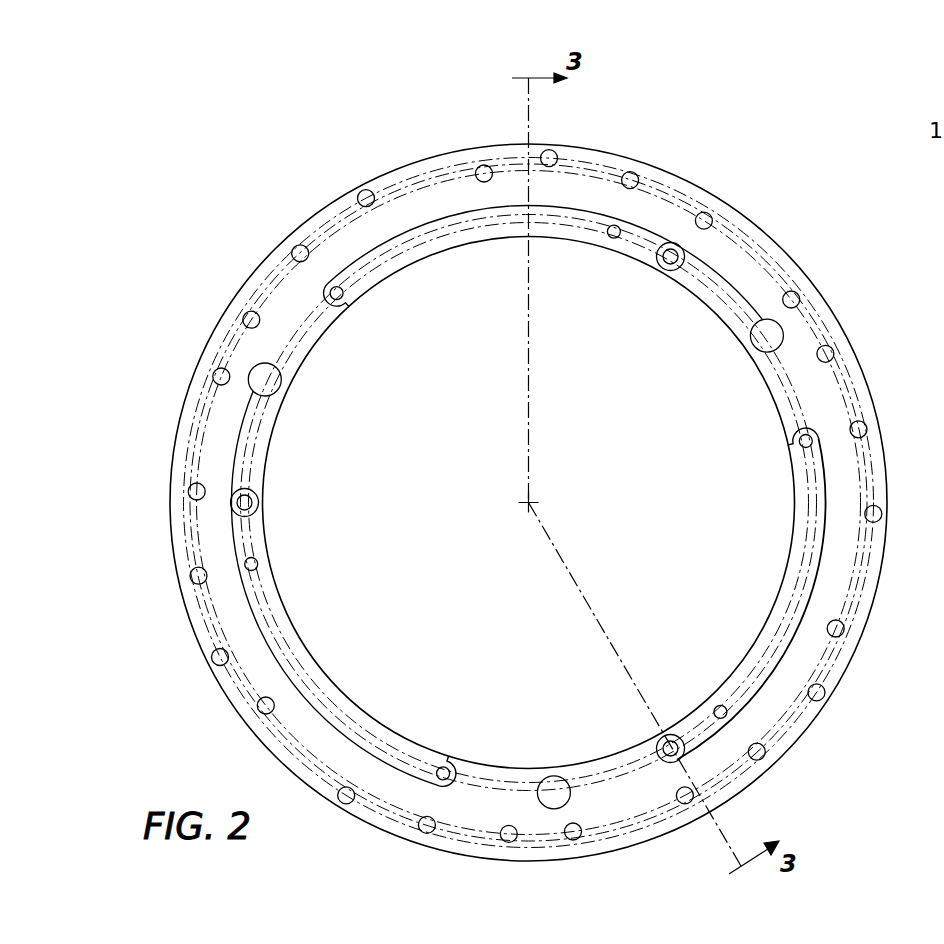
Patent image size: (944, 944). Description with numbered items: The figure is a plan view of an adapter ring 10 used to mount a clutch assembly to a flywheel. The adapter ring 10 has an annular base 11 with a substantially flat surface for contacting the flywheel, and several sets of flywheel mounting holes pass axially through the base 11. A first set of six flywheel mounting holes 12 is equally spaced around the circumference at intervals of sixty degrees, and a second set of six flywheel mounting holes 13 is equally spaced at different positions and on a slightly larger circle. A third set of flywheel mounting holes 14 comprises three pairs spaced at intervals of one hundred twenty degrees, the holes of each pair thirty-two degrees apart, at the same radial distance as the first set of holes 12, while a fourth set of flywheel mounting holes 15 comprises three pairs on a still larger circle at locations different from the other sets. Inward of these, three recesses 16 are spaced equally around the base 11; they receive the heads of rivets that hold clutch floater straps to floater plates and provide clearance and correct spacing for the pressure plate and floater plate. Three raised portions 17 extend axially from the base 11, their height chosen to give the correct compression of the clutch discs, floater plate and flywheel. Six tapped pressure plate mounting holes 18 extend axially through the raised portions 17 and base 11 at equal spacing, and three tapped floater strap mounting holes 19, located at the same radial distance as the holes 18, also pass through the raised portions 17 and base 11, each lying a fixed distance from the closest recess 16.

The adapter ring 10 is at (211, 182).
The annular base 11 is at (696, 183).
The first set of flywheel mounting holes 12 is at (480, 167).
The second set of flywheel mounting holes 13 is at (634, 172).
The third set of flywheel mounting holes 14 is at (712, 217).
The fourth set of flywheel mounting holes 15 is at (552, 150).
The recesses 16 is at (281, 385).
The raised portions 17 is at (484, 232).
The pressure plate mounting holes 18 is at (343, 298).
The floater strap mounting holes 19 is at (259, 502).